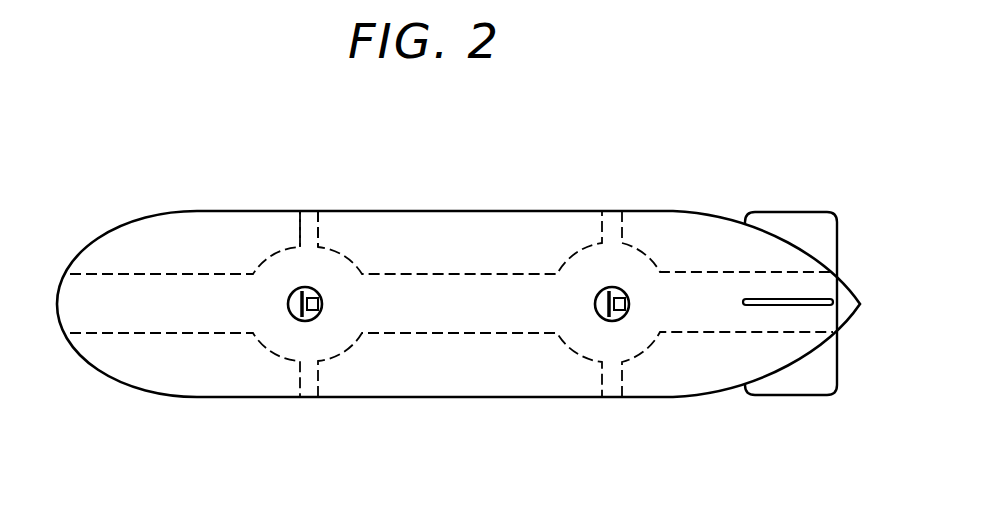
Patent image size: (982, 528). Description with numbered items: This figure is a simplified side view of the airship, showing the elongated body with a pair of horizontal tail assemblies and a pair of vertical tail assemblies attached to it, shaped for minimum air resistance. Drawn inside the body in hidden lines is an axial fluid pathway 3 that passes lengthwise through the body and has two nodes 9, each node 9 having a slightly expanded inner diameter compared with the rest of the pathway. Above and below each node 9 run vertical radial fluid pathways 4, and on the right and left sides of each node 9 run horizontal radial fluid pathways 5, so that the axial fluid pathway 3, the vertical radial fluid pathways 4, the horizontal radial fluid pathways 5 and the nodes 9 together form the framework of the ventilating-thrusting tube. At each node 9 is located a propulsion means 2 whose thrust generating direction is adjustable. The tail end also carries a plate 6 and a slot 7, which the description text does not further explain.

The propulsion means 2 is at (299, 325).
The axial fluid pathway 3 is at (174, 278).
The vertical radial fluid pathway 4 is at (290, 235).
The horizontal radial fluid pathway 5 is at (310, 310).
The mounting plate 6 is at (792, 211).
The slot 7 is at (767, 306).
The node 9 is at (340, 342).